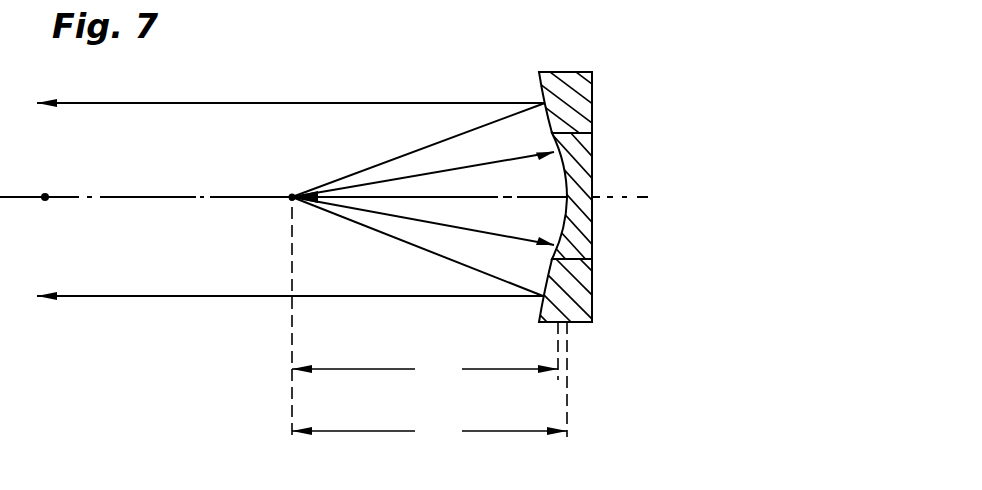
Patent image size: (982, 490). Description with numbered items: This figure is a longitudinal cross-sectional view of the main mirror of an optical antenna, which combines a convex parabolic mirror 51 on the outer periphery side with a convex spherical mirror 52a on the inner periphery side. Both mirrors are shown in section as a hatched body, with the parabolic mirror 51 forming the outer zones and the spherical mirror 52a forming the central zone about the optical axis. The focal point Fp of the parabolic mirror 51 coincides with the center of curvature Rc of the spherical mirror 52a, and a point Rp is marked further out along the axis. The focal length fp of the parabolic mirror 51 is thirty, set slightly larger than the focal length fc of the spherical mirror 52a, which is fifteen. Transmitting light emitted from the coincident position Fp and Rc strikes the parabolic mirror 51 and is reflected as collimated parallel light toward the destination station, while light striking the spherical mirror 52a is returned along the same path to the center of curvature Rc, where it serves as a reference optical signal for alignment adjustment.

The parabolic mirror 51 is at (550, 284).
The spherical mirror 52a is at (565, 178).
The paraboloid reference point Rp is at (45, 195).
The focal point of the parabolic mirror Fp is at (292, 196).
The center of curvature of the spherical mirror Rc is at (291, 200).
The focal length of the parabolic mirror fp is at (425, 369).
The focal length of the spherical mirror fc is at (429, 431).